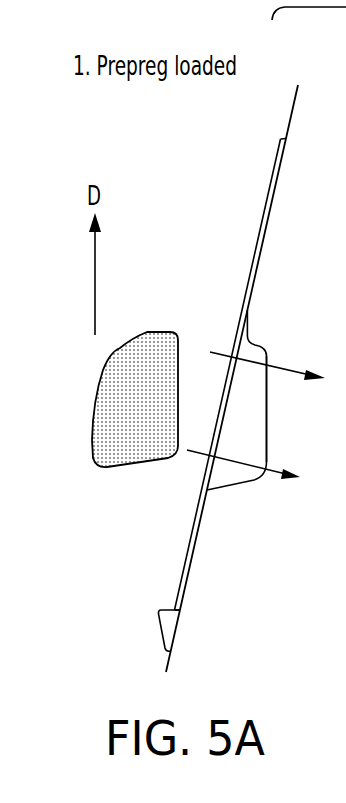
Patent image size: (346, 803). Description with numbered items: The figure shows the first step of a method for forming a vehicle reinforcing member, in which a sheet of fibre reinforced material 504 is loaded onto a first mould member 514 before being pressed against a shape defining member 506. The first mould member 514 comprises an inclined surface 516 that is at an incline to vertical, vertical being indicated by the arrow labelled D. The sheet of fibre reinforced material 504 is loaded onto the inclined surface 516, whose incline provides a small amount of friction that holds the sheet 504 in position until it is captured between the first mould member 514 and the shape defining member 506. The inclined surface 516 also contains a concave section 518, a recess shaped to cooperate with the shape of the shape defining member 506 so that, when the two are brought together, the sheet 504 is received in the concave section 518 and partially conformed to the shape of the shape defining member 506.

The sheet of fibre reinforced material 504 is at (261, 222).
The shape defining member 506 is at (110, 458).
The first mould member 514 is at (270, 343).
The inclined surface 516 is at (293, 102).
The concave section 518 is at (257, 419).